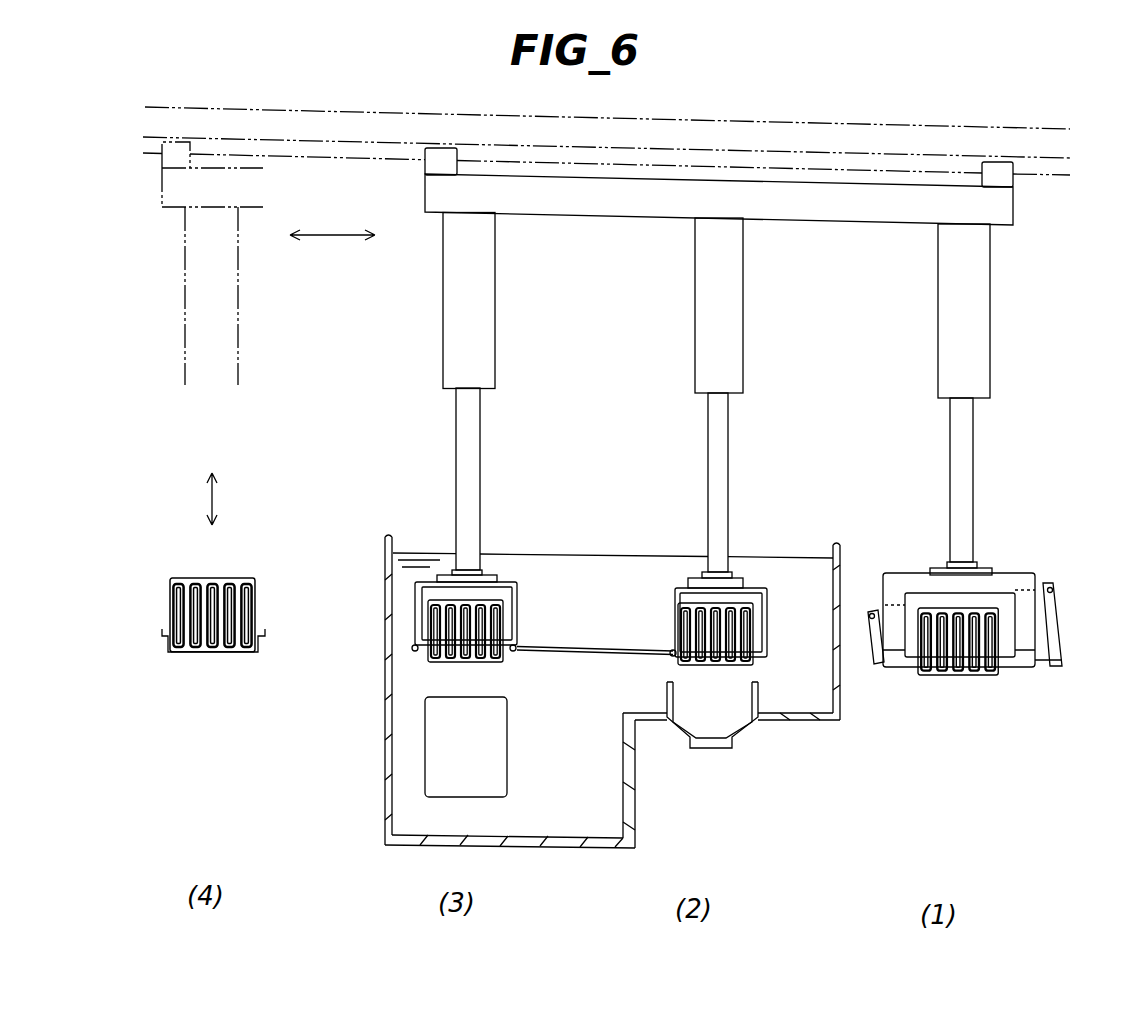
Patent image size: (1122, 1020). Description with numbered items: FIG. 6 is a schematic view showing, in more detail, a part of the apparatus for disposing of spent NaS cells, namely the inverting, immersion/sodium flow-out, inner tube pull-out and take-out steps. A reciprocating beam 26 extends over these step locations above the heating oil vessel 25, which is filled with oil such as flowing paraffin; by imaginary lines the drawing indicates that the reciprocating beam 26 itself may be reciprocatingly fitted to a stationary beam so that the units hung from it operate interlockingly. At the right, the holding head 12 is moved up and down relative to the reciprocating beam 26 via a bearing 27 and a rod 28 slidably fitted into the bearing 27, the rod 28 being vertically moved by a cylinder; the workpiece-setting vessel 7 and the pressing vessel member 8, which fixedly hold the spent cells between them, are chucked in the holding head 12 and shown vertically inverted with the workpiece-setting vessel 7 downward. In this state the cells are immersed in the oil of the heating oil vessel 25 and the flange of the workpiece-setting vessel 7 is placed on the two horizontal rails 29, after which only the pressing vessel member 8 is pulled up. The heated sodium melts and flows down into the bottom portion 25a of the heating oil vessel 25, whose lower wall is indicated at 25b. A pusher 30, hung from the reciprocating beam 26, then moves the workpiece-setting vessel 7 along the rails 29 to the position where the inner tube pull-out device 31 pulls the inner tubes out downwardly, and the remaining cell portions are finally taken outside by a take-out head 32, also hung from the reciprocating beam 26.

The workpiece-setting vessel 7 is at (670, 660).
The pressing vessel member 8 is at (928, 607).
The holding head 12 is at (1003, 573).
The heating oil vessel 25 is at (797, 725).
The bottom portion of the heating oil vessel 25a is at (750, 735).
The tank bottom 25b is at (535, 850).
The reciprocating beam 26 is at (847, 215).
The bearing 27 is at (977, 330).
The rod 28 is at (967, 442).
The rails 29 is at (580, 646).
The pusher 30 is at (758, 404).
The inner tube pull-out device 31 is at (495, 757).
The take-out head 32 is at (490, 570).